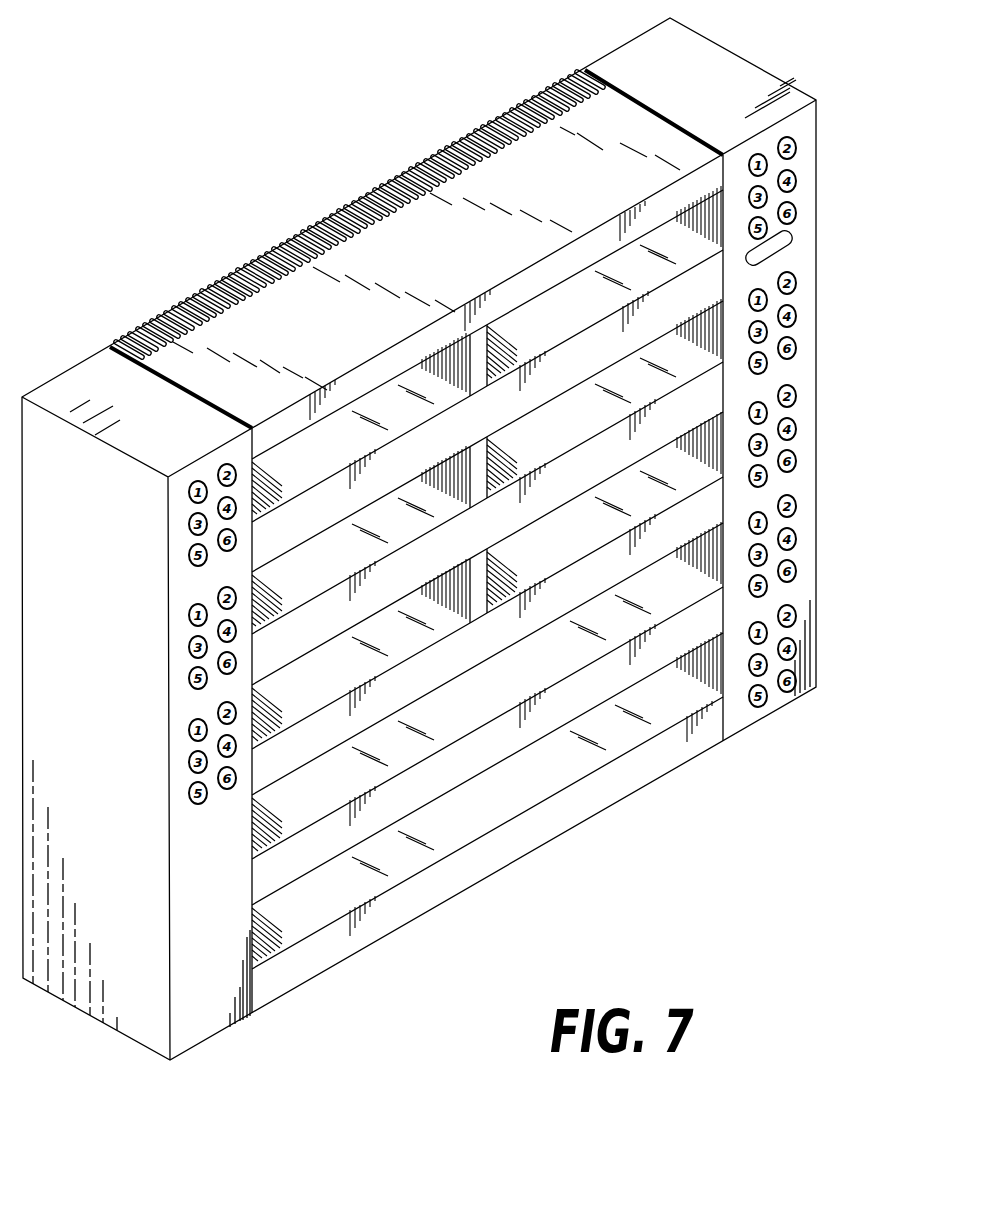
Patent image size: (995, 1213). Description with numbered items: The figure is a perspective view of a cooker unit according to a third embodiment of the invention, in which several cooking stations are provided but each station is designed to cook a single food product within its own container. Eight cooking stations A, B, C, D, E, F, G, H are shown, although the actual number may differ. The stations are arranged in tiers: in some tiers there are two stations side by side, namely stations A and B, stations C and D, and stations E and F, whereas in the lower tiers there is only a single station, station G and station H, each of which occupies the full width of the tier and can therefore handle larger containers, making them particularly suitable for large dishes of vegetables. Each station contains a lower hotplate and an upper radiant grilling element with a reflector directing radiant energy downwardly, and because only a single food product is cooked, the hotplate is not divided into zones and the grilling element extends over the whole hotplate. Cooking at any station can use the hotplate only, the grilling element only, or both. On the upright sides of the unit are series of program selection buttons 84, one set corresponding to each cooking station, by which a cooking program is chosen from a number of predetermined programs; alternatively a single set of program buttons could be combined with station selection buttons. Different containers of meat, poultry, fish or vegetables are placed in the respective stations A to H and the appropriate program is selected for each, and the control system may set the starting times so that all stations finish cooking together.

The program selection buttons 84 is at (787, 166).
The cooking station A is at (361, 427).
The cooking station B is at (605, 286).
The cooking station C is at (361, 540).
The cooking station D is at (605, 398).
The cooking station E is at (361, 654).
The cooking station F is at (605, 512).
The cooking station G is at (487, 690).
The cooking station H is at (487, 800).